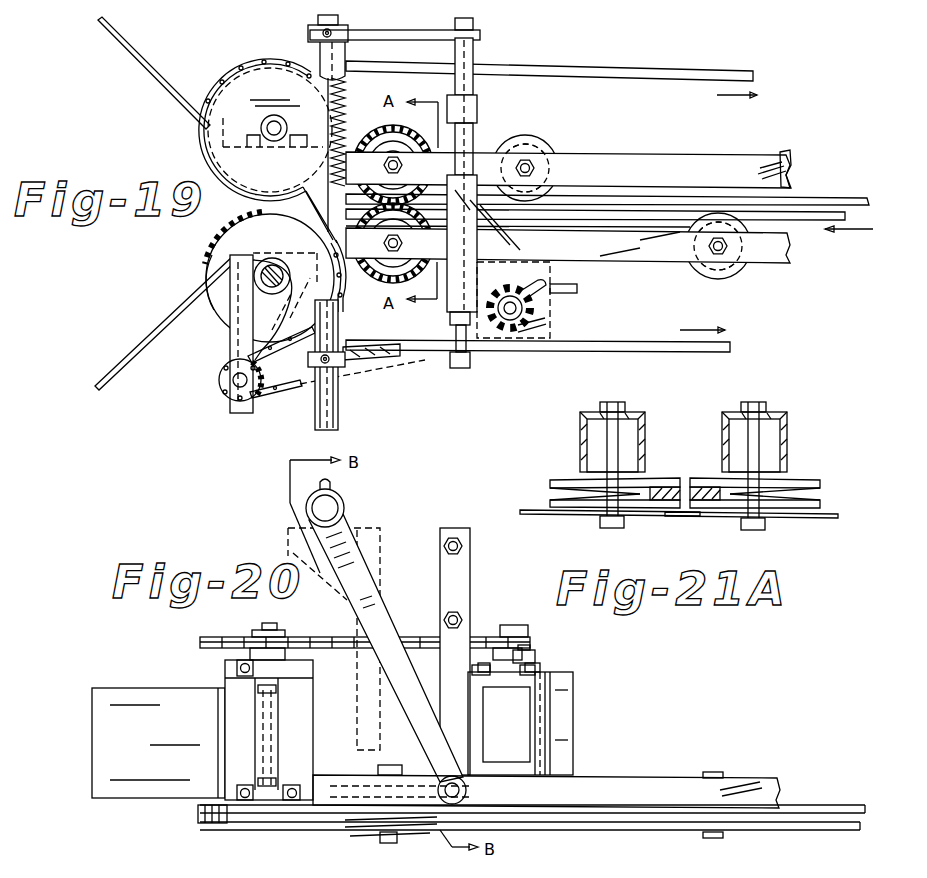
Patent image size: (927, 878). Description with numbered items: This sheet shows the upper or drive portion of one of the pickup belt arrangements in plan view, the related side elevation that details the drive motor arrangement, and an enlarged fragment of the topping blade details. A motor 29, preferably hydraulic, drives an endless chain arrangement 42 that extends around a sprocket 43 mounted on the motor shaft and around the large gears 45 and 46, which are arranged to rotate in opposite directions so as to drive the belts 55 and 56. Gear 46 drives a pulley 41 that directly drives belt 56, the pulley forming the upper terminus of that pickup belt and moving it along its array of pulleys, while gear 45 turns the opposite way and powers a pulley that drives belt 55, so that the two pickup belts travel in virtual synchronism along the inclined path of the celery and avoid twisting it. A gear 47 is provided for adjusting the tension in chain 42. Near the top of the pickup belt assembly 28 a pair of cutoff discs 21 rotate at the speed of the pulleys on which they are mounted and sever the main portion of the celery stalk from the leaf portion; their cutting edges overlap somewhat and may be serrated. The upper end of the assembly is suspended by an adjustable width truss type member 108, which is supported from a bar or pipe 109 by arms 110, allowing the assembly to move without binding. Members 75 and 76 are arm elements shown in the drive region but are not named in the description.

In FIG. 19, the cutoff discs 21 is at (379, 140).
In FIG. 20, the cutoff discs 21 is at (358, 829).
In FIG. 21A, the cutoff discs 21 is at (545, 513).
In FIG. 19, the pickup belt assembly 28 is at (786, 148).
In FIG. 19, the motor 29 is at (542, 322).
In FIG. 20, the motor 29 is at (528, 728).
In FIG. 20, the pulley 41 is at (225, 827).
In FIG. 19, the endless chain arrangement 42 is at (413, 361).
In FIG. 20, the endless chain arrangement 42 is at (473, 640).
In FIG. 19, the sprocket 43 is at (537, 310).
In FIG. 20, the sprocket 43 is at (518, 638).
In FIG. 19, the large gear 45 is at (266, 108).
In FIG. 19, the large gear 46 is at (227, 233).
In FIG. 20, the large gear 46 is at (317, 637).
In FIG. 19, the gear 47 is at (230, 394).
In FIG. 19, the belt 55 is at (589, 64).
In FIG. 19, the pickup belt 56 is at (582, 354).
In FIG. 20, the pickup belt 56 is at (630, 824).
In FIG. 19, the upper arm 75 is at (697, 165).
In FIG. 19, the lower arm 76 is at (765, 257).
In FIG. 19, the adjustable width truss type member 108 is at (466, 221).
In FIG. 19, the bar or pipe 109 is at (340, 421).
In FIG. 20, the arms 110 is at (368, 592).